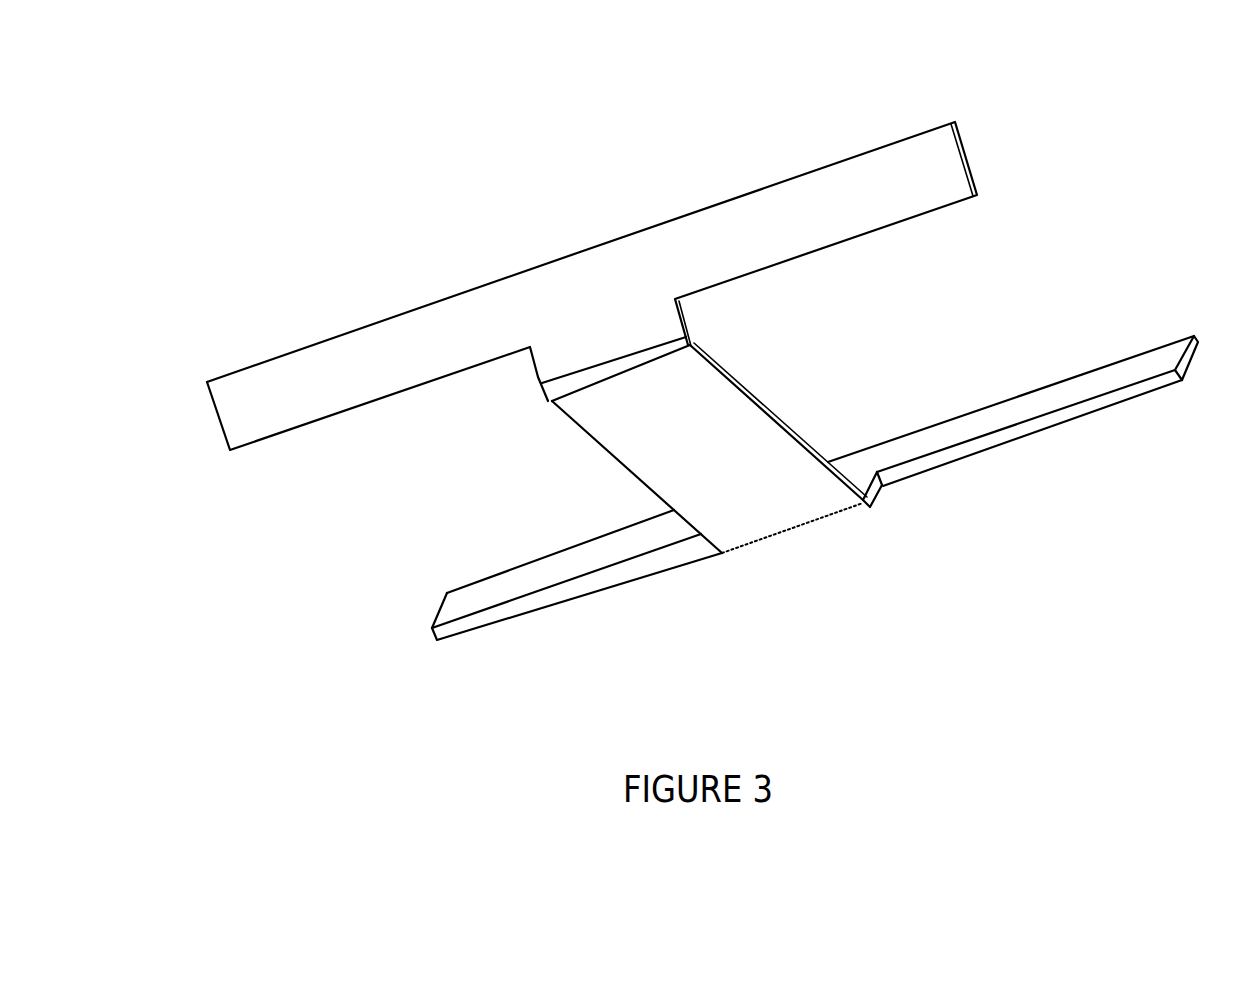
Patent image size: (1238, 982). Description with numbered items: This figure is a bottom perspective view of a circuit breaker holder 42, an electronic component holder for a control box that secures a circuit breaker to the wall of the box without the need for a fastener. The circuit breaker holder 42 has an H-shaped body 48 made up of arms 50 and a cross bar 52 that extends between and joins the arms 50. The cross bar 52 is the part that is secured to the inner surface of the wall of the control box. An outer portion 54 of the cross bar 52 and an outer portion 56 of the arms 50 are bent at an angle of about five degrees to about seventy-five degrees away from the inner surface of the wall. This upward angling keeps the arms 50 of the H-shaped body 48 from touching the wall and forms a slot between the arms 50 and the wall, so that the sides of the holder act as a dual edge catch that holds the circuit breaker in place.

The circuit breaker holder 42 is at (1087, 172).
The H-shaped body 48 is at (313, 693).
The arms 50 is at (362, 388).
The cross bar 52 is at (735, 454).
The outer portion of the crossbar 54 is at (678, 345).
The outer portion of the arms 56 is at (582, 255).